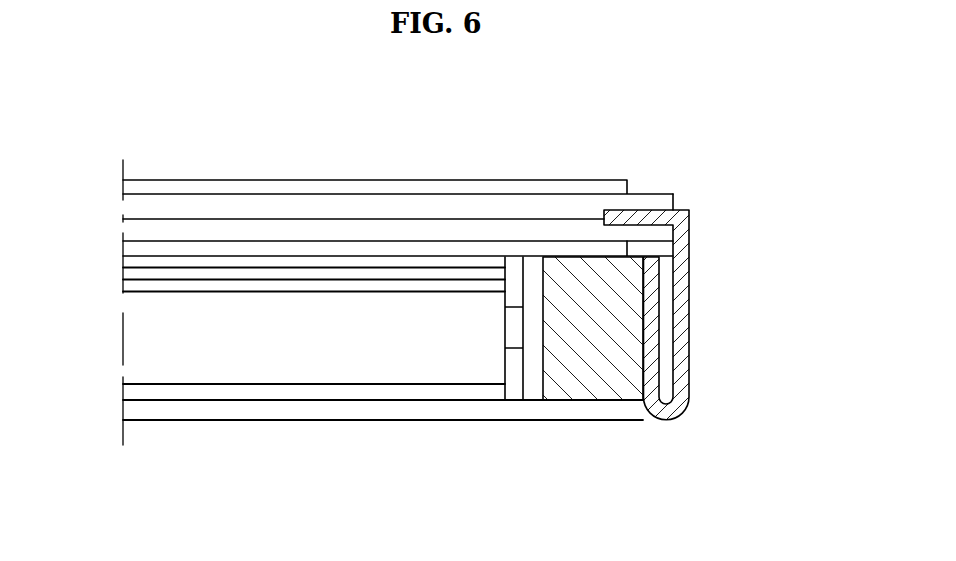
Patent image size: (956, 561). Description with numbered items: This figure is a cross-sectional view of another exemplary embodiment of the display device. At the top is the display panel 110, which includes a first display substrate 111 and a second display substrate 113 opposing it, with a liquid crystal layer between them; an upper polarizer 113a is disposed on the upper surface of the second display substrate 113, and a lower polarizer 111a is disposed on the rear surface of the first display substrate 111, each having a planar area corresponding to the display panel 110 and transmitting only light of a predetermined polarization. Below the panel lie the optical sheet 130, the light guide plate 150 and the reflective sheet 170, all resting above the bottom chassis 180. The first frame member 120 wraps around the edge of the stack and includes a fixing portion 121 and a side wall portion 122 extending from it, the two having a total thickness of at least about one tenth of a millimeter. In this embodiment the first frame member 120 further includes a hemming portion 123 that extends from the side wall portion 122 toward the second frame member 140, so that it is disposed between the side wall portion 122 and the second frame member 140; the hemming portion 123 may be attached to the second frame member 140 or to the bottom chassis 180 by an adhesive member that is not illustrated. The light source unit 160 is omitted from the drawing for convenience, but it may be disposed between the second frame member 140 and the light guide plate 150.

The display panel 110 is at (433, 133).
The first display substrate 111 is at (433, 226).
The lower polarizer 111a is at (500, 248).
The second display substrate 113 is at (358, 207).
The upper polarizer 113a is at (298, 189).
The first frame member 120 is at (758, 185).
The fixing portion 121 is at (641, 214).
The side wall portion 122 is at (681, 266).
The hemming portion 123 is at (650, 298).
The optical sheet 130 is at (119, 252).
The second frame member 140 is at (595, 337).
The light guide plate 150 is at (158, 343).
The light source unit 160 is at (513, 333).
The reflective sheet 170 is at (157, 388).
The bottom chassis 180 is at (397, 410).